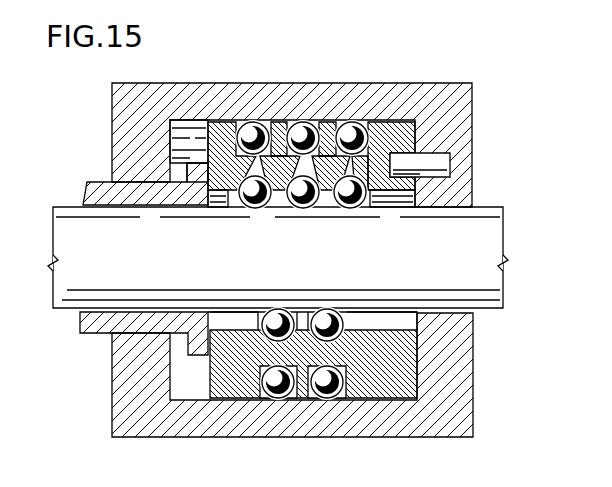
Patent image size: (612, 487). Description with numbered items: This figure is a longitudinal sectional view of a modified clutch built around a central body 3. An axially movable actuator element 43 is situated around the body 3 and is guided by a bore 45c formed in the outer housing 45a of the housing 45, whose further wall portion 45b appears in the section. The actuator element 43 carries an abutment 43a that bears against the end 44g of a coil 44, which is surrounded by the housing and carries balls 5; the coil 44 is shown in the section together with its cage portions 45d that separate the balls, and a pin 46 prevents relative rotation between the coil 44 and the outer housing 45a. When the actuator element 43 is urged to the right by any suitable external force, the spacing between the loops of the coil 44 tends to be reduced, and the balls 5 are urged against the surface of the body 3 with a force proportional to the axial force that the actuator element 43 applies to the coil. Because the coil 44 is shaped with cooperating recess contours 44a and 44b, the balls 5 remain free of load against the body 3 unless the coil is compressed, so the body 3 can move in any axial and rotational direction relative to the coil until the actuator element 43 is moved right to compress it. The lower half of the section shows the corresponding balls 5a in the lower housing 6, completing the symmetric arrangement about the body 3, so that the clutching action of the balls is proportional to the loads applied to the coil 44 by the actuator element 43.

The body 3 is at (356, 248).
The balls 5 is at (250, 196).
The balls 5a is at (273, 387).
The lower housing 6 is at (292, 394).
The axially movable actuator element 43 is at (130, 214).
The abutment 43a is at (208, 180).
The coil 44 is at (311, 145).
The recess contour 44a is at (368, 192).
The recess contour 44b is at (335, 177).
The end of coil 44g is at (205, 145).
The housing 45 is at (293, 123).
The outer housing 45a is at (372, 85).
The housing side wall 45b is at (470, 182).
The bore 45c is at (142, 180).
The cage 45d is at (230, 122).
The pin 46 is at (427, 165).